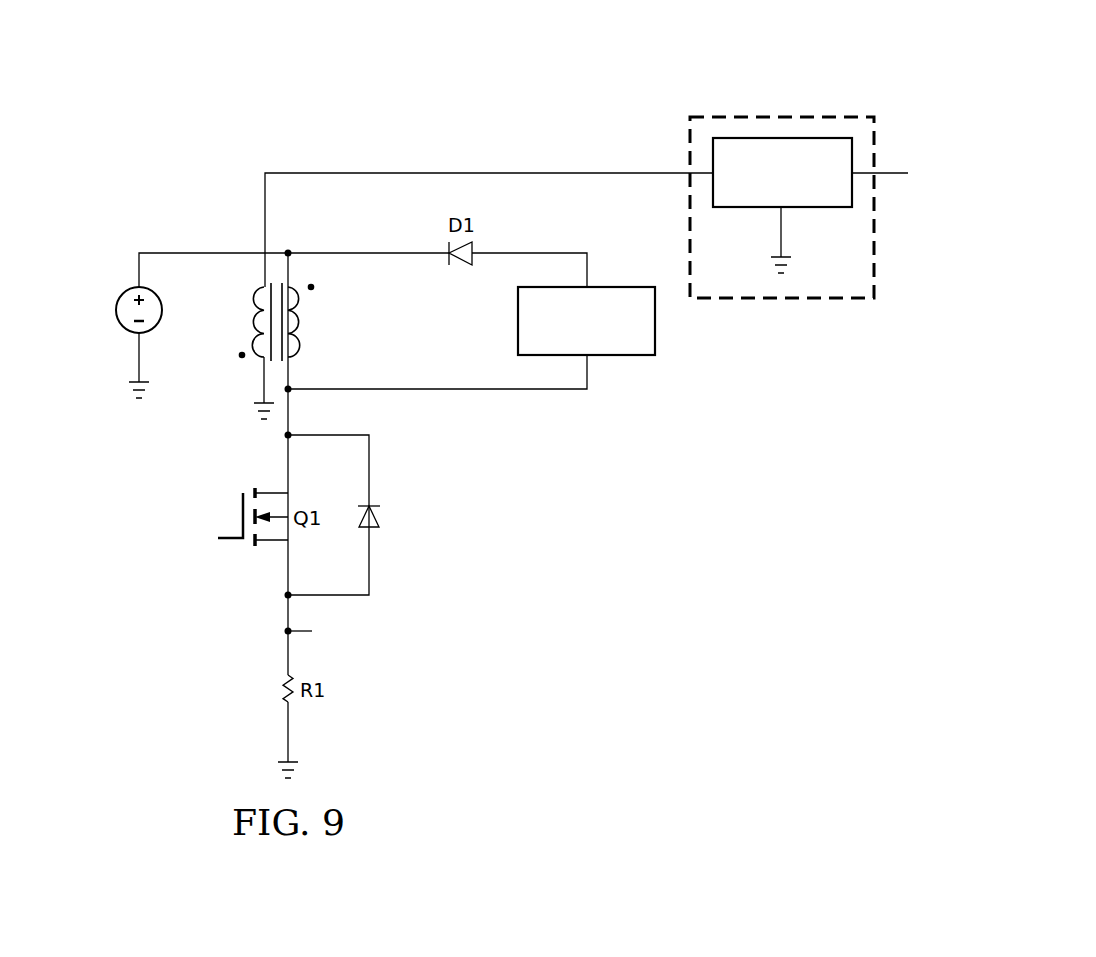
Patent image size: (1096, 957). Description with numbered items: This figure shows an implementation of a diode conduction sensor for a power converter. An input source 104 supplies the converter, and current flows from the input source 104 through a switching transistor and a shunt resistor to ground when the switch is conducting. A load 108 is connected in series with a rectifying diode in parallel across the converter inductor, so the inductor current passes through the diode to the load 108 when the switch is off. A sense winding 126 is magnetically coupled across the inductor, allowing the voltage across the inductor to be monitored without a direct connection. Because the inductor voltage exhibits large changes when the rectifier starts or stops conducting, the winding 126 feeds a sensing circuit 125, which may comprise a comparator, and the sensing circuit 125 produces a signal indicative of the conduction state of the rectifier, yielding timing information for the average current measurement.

The input source 104 is at (123, 291).
The sense winding 126 is at (247, 313).
The load 108 is at (608, 287).
The sensing circuit 125 is at (814, 111).